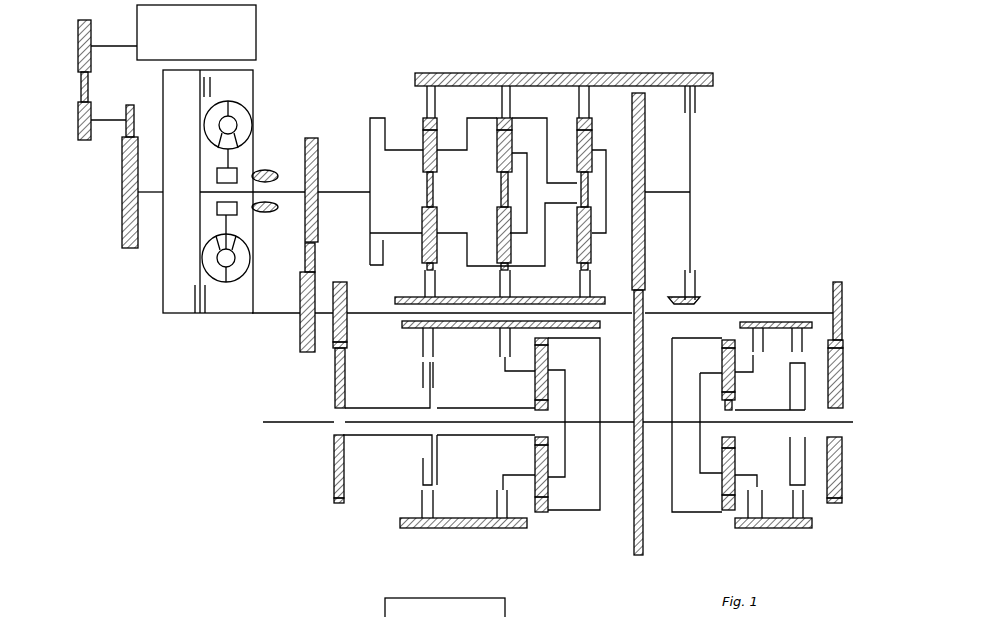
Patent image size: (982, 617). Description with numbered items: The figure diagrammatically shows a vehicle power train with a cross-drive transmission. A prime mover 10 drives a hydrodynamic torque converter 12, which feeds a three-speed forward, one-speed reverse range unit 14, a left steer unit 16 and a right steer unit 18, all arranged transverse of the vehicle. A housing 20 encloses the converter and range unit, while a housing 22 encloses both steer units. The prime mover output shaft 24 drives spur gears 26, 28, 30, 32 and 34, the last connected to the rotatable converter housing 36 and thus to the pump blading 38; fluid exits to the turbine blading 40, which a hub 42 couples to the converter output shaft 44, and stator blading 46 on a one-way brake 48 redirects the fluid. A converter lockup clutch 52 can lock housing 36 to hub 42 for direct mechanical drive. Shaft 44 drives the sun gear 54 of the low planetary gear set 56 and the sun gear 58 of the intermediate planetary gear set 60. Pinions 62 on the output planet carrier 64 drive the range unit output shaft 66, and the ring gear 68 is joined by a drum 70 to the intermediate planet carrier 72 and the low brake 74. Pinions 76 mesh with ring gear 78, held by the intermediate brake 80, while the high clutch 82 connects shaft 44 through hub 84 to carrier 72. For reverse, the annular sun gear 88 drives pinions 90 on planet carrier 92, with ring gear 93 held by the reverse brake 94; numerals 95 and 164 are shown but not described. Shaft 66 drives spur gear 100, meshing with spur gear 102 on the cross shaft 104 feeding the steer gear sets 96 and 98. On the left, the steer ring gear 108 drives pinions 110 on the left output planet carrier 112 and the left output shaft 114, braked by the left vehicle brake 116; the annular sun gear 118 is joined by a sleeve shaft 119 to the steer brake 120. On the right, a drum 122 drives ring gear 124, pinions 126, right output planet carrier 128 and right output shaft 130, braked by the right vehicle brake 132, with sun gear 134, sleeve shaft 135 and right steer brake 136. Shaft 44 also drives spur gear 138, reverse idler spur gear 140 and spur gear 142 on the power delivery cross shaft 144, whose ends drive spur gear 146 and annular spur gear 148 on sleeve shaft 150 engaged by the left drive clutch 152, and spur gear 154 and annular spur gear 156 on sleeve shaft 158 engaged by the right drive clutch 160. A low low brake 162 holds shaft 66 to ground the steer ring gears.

The prime mover 10 is at (256, 19).
The hydrodynamic torque converter 12 is at (241, 185).
The range unit 14 is at (602, 72).
The left steer unit 16 is at (510, 530).
The right steer unit 18 is at (775, 530).
The housing 20 is at (275, 178).
The housing 22 is at (425, 525).
The output shaft 24 is at (107, 46).
The spur gear 26 is at (78, 38).
The reverse idler gear 28 is at (81, 87).
The spur gear 30 is at (78, 130).
The spur gear 32 is at (135, 120).
The spur gear 34 is at (122, 160).
The converter housing 36 is at (256, 70).
The pump blading 38 is at (250, 129).
The turbine blading 40 is at (219, 138).
The hub 42 is at (200, 165).
The converter output shaft 44 is at (290, 212).
The stator blading 46 is at (240, 144).
The one-way brake 48 is at (217, 208).
The converter lockup clutch 52 is at (204, 79).
The sun gear 54 is at (497, 213).
The low planetary gear set 56 is at (497, 165).
The sun gear 58 is at (422, 213).
The intermediate planetary gear set 60 is at (427, 175).
The planetary pinions 62 is at (497, 138).
The output planet carrier 64 is at (520, 160).
The output shaft 66 is at (577, 222).
The ring gear 68 is at (512, 118).
The drum 70 is at (497, 130).
The planet carrier 72 is at (460, 150).
The low brake 74 is at (515, 95).
The planetary pinions 76 is at (423, 162).
The ring gear 78 is at (425, 118).
The intermediate brake 80 is at (440, 87).
The high clutch 82 is at (372, 118).
The hub 84 is at (370, 160).
The annular sun gear 88 is at (578, 170).
The planetary pinions 90 is at (580, 138).
The planet carrier 92 is at (612, 178).
The ring gear 93 is at (592, 120).
The reverse brake 94 is at (592, 95).
The gear 95 is at (592, 138).
The left steer gear set 96 is at (548, 363).
The right steer gear set 98 is at (722, 350).
The spur gear 100 is at (688, 148).
The spur gear 102 is at (645, 292).
The cross shaft 104 is at (634, 420).
The steer ring gear 108 is at (565, 338).
The pinions 110 is at (535, 378).
The left output planet carrier 112 is at (548, 445).
The left output shaft 114 is at (265, 422).
The left vehicle brake 116 is at (500, 345).
The annular sun gear 118 is at (535, 405).
The sleeve shaft 119 is at (463, 406).
The steer brake 120 is at (423, 350).
The drum 122 is at (678, 338).
The ring gear 124 is at (730, 340).
The planetary pinions 126 is at (748, 385).
The right output planet carrier 128 is at (700, 380).
The right output shaft 130 is at (828, 440).
The right vehicle brake 132 is at (772, 322).
The annular sun gear 134 is at (722, 440).
The sleeve shaft 135 is at (752, 405).
The right steer brake 136 is at (800, 330).
The spur gear 138 is at (318, 235).
The reverse idler spur gear 140 is at (318, 262).
The spur gear 142 is at (300, 330).
The power delivery cross shaft 144 is at (600, 298).
The spur gear 146 is at (347, 340).
The annular spur gear 148 is at (335, 365).
The sleeve shaft 150 is at (430, 410).
The left drive clutch 152 is at (423, 370).
The spur gear 154 is at (833, 282).
The annular spur gear 156 is at (828, 395).
The sleeve shaft 158 is at (795, 437).
The right drive clutch 160 is at (790, 366).
The low low brake 162 is at (697, 95).
The control unit 164 is at (506, 606).